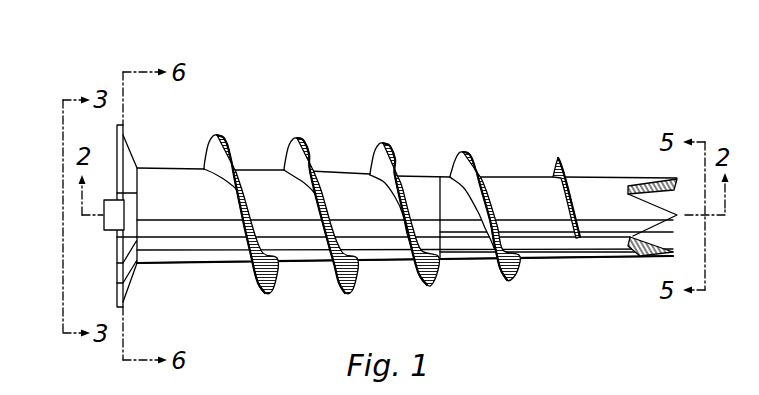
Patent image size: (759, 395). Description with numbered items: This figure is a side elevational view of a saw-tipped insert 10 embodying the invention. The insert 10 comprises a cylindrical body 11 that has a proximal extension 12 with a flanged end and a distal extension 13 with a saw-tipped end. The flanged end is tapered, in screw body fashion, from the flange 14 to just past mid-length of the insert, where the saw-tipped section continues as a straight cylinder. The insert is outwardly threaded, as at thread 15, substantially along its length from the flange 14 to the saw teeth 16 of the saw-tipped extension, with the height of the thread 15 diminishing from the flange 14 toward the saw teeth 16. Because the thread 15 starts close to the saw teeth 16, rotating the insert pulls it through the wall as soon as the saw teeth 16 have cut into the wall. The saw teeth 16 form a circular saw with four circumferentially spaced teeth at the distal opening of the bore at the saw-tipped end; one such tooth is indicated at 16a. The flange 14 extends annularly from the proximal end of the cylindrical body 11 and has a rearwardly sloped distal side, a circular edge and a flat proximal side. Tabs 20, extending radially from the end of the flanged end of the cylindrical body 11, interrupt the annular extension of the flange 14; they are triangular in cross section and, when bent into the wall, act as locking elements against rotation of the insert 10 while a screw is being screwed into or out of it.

The insert 10 is at (545, 108).
The cylindrical body 11 is at (412, 170).
The proximal extension 12 is at (258, 210).
The distal extension 13 is at (540, 210).
The flange 14 is at (127, 140).
The thread 15 is at (563, 160).
The saw teeth 16 is at (639, 173).
The lower tip blade 16a is at (623, 257).
The tabs 20 is at (107, 222).